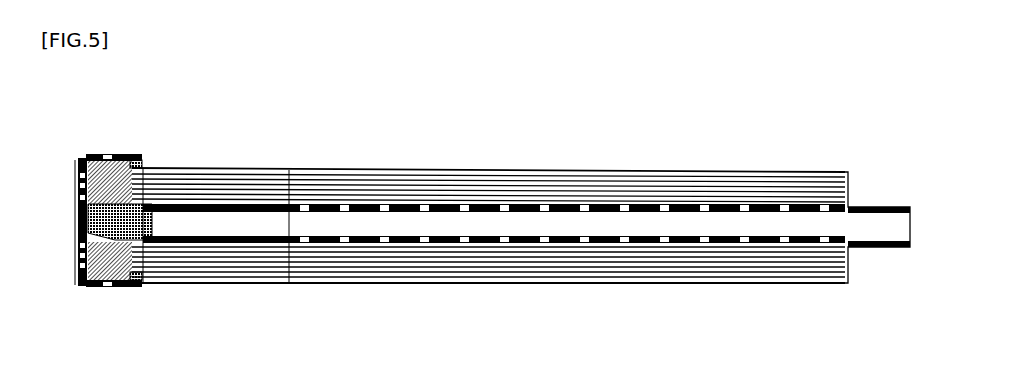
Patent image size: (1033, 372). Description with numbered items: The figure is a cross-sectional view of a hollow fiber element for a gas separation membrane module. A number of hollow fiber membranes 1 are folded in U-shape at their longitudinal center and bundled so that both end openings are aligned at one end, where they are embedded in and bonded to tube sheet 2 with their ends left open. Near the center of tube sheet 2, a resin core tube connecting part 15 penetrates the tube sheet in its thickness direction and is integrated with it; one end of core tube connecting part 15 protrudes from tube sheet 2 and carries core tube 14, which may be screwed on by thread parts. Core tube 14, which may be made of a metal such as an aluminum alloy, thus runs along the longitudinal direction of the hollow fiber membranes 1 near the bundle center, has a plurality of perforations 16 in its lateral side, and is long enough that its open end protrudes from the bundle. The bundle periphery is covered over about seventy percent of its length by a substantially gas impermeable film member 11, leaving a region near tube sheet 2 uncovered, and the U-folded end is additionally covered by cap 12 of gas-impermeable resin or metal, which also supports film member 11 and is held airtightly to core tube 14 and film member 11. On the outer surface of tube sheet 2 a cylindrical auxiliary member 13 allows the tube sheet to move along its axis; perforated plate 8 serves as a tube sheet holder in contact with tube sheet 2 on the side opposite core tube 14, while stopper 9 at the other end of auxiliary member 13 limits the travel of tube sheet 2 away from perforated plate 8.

The hollow fiber membranes 1 is at (382, 165).
The tube sheet 2 is at (102, 268).
The perforated plate 8 is at (80, 158).
The stopper 9 is at (140, 158).
The film member 11 is at (455, 167).
The cap 12 is at (818, 282).
The auxiliary member 13 is at (110, 154).
The core tube 14 is at (250, 202).
The core tube connecting part 15 is at (128, 222).
The perforations 16 is at (542, 207).